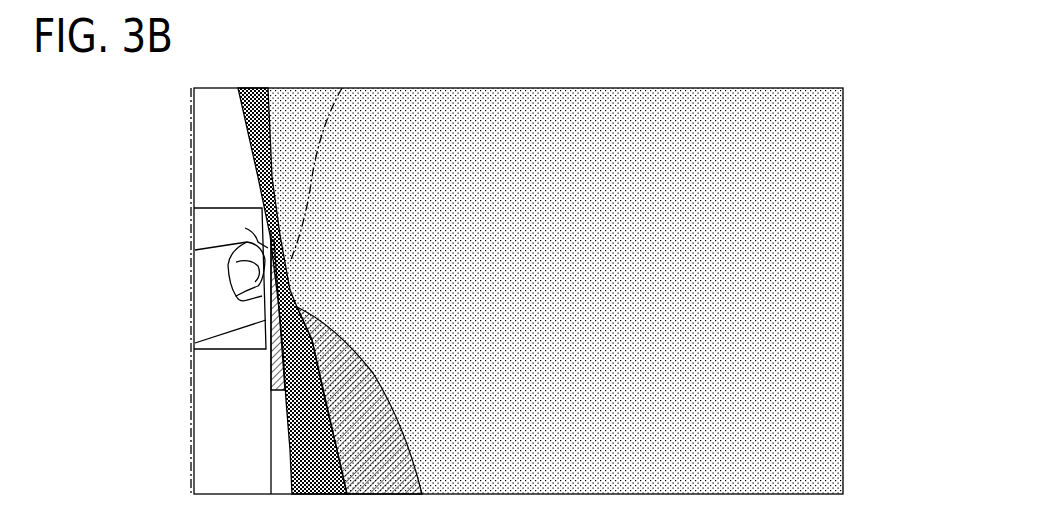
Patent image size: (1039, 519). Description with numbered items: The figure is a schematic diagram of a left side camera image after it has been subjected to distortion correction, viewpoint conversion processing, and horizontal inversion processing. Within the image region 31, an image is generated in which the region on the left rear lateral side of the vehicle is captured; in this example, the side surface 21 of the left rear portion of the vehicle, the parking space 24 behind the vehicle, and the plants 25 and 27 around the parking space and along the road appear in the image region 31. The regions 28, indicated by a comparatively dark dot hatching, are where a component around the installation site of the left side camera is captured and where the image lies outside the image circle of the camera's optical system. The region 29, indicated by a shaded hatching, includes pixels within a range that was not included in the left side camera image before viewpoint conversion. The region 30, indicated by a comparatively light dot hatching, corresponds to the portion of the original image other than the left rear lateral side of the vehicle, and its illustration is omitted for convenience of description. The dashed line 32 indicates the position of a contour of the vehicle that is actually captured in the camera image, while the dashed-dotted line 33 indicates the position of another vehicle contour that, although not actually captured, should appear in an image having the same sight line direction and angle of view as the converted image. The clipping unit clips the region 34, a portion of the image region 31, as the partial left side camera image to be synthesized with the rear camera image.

The side surface of the left rear portion 21 is at (195, 343).
The parking space 24 is at (228, 262).
The plants 25 is at (247, 282).
The plants 27 is at (245, 228).
The regions 28 is at (250, 95).
The region 29 is at (276, 360).
The region 30 is at (812, 293).
The image region 31 is at (192, 115).
The dashed line 32 is at (270, 398).
The dashed-dotted line 33 is at (318, 152).
The region 34 is at (215, 207).